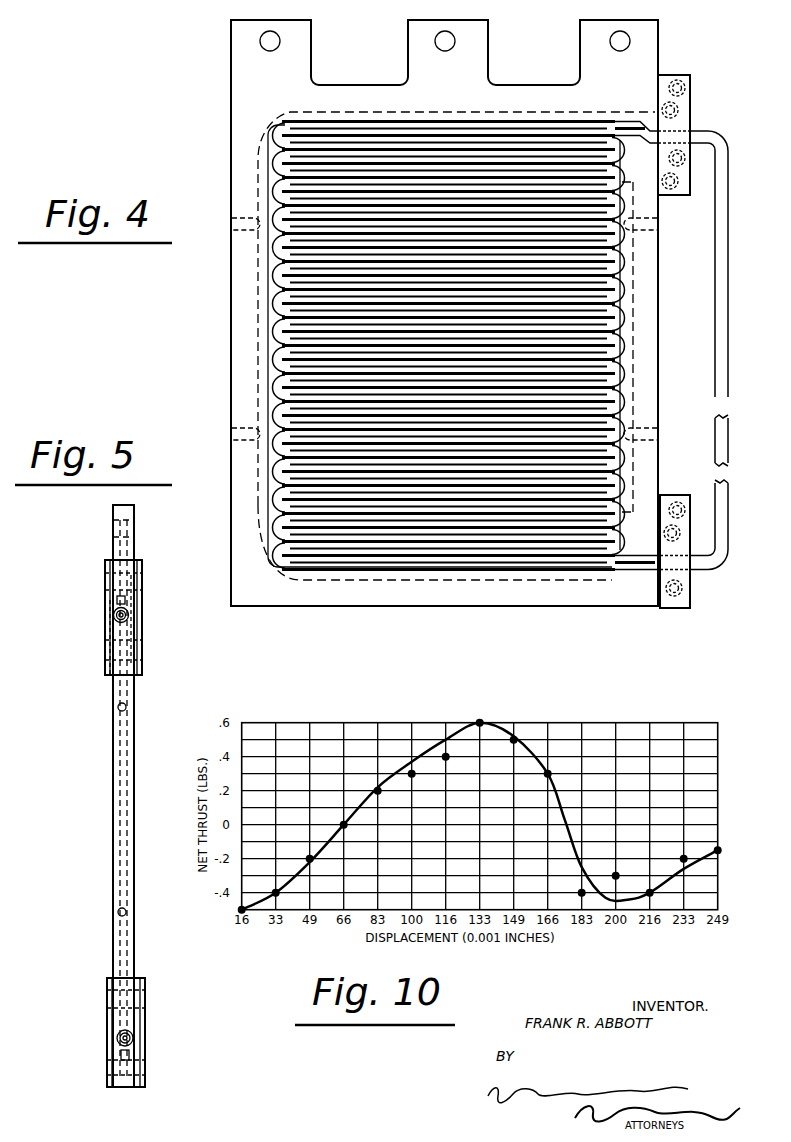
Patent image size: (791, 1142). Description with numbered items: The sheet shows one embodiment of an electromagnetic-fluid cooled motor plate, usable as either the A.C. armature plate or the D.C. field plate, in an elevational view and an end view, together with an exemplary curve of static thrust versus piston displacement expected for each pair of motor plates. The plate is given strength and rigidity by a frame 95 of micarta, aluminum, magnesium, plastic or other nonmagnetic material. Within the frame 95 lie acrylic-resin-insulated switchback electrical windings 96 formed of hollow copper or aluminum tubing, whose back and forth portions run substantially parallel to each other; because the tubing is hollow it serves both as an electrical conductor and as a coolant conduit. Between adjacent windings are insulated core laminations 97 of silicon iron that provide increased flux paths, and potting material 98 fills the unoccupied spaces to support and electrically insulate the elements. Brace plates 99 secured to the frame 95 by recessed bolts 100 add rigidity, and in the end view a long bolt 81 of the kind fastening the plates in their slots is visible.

In FIG. 4, the frame 95 is at (497, 84).
In FIG. 5, the frame 95 is at (134, 549).
In FIG. 4, the switchback electrical windings 96 is at (285, 128).
In FIG. 4, the insulated core laminations 97 is at (277, 258).
In FIG. 4, the potting material 98 is at (268, 157).
In FIG. 4, the brace plates 99 is at (690, 134).
In FIG. 5, the brace plates 99 is at (143, 633).
In FIG. 4, the recessed bolts 100 is at (690, 83).
In FIG. 5, the recessed bolts 100 is at (105, 597).
In FIG. 5, the long bolts 81 is at (114, 621).